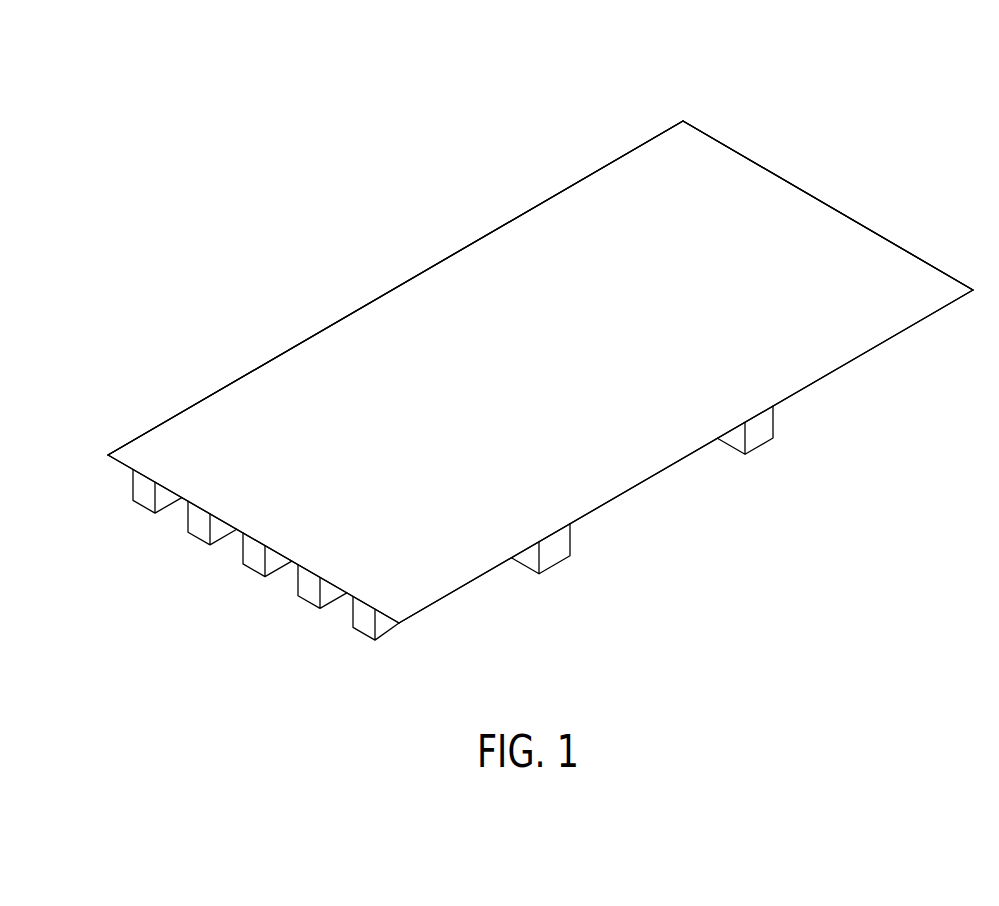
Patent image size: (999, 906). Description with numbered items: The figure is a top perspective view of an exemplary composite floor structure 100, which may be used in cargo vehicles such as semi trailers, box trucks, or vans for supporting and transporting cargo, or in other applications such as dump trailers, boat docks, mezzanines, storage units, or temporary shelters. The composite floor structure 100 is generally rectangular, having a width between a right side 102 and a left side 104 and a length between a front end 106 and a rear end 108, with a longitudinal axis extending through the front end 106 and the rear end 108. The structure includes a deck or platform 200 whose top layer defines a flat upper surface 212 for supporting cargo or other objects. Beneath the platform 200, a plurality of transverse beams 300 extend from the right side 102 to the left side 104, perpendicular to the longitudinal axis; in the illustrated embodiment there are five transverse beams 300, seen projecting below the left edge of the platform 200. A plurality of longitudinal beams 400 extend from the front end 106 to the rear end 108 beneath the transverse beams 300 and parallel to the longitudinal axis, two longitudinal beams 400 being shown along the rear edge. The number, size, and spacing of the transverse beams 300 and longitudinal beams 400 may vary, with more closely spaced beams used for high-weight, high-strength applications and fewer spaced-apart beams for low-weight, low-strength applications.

The composite floor structure 100 is at (873, 123).
The right side 102 is at (875, 232).
The left side 104 is at (123, 465).
The front end 106 is at (515, 219).
The rear end 108 is at (870, 353).
The platform 200 is at (438, 320).
The flat upper surface 212 is at (579, 357).
The transverse beams 300 is at (143, 490).
The longitudinal beams 400 is at (548, 553).